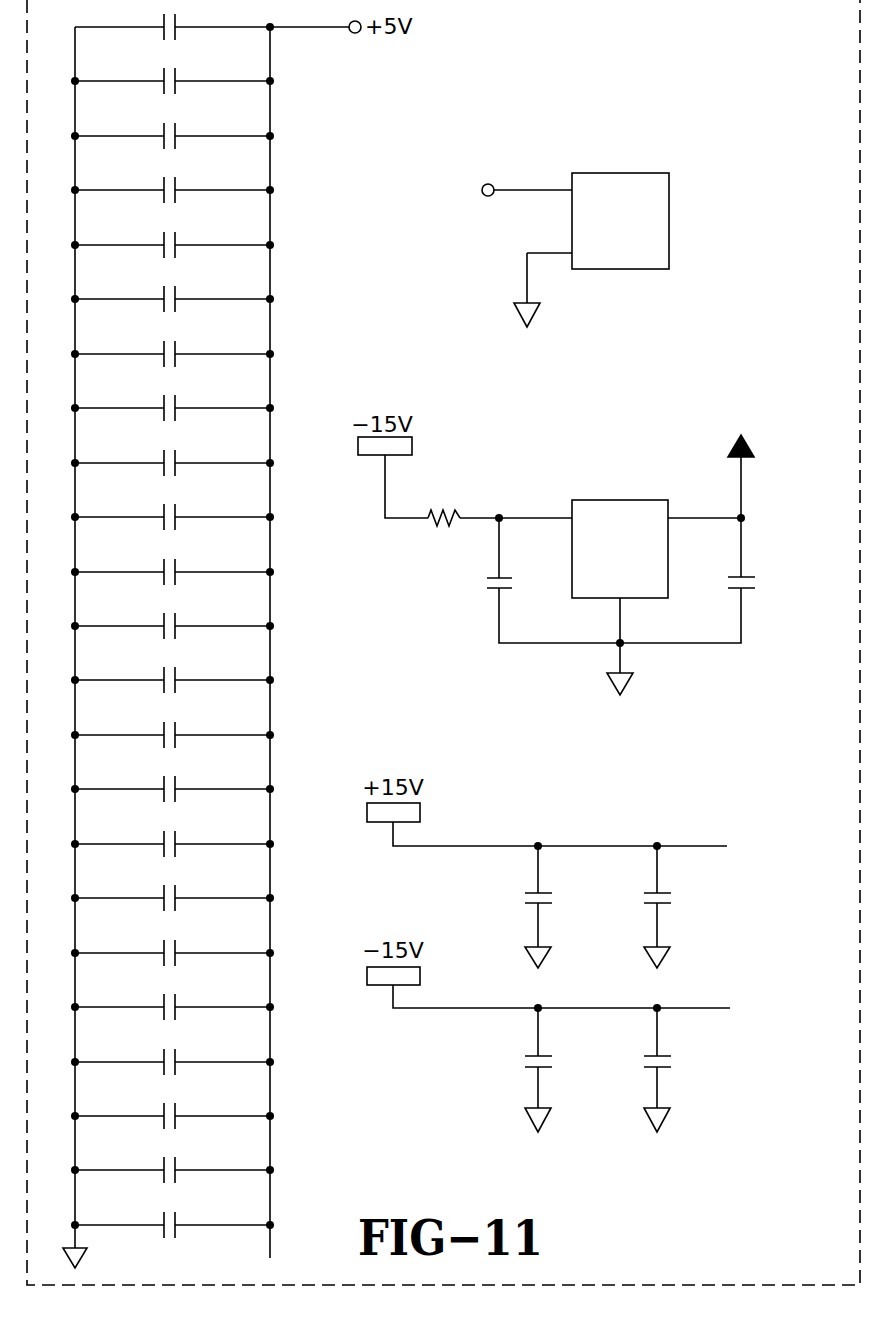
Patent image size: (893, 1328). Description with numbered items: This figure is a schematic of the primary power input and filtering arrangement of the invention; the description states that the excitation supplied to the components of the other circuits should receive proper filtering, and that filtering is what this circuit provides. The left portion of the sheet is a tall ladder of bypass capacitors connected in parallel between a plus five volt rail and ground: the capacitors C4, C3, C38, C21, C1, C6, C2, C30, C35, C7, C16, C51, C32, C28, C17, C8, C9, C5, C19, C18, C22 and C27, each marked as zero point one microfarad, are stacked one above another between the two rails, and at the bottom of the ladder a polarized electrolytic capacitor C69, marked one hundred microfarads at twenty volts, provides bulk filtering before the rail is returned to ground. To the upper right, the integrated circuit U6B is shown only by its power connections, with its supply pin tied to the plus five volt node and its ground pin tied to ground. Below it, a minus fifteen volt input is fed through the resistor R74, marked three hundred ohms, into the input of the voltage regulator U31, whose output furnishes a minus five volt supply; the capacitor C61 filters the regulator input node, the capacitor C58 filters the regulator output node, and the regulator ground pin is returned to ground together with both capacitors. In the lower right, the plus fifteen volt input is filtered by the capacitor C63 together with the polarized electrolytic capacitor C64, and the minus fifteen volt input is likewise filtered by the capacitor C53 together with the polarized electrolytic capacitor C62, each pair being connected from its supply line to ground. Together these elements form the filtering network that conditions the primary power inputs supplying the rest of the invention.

The capacitor C4 0.1uf C4 is at (172, 20).
The capacitor C3 0.1uf C3 is at (172, 74).
The capacitor C38 0.1uf C38 is at (172, 129).
The capacitor C21 0.1uf C21 is at (172, 183).
The capacitor C1 0.1uf C1 is at (172, 238).
The capacitor C6 0.1uf C6 is at (172, 292).
The capacitor C2 0.1uf C2 is at (172, 347).
The capacitor C30 0.1uf C30 is at (172, 401).
The capacitor C35 0.1uf C35 is at (172, 456).
The capacitor C7 0.1uf C7 is at (172, 510).
The capacitor C16 0.1uf C16 is at (172, 565).
The capacitor C51 0.1uf C51 is at (172, 619).
The capacitor C32 0.1uf C32 is at (172, 673).
The capacitor C28 0.1uf C28 is at (172, 728).
The capacitor C17 0.1uf C17 is at (172, 782).
The capacitor C8 0.1uf C8 is at (172, 837).
The capacitor C9 0.1uf C9 is at (172, 891).
The capacitor C5 0.1uf C5 is at (172, 946).
The capacitor C19 0.1uf C19 is at (172, 1000).
The capacitor C18 0.1uf C18 is at (172, 1055).
The capacitor C22 0.1uf C22 is at (172, 1109).
The capacitor C27 0.1uf C27 is at (172, 1163).
The electrolytic capacitor C69 100uf 20V C69 is at (172, 1222).
The integrated circuit U6B power pins (VCC pin 16, GND pin 8) U6B is at (542, 237).
The resistor R74 300 ohm R74 is at (441, 519).
The voltage regulator U31 (-5V output) U31 is at (620, 585).
The capacitor C61 0.1uf C61 is at (526, 580).
The capacitor C58 0.1uf C58 is at (715, 527).
The capacitor C63 0.1uf C63 is at (512, 907).
The electrolytic capacitor C64 100uf 20V C64 is at (685, 907).
The capacitor C53 0.1uf C53 is at (512, 1070).
The electrolytic capacitor C62 100uf 20V C62 is at (685, 1070).